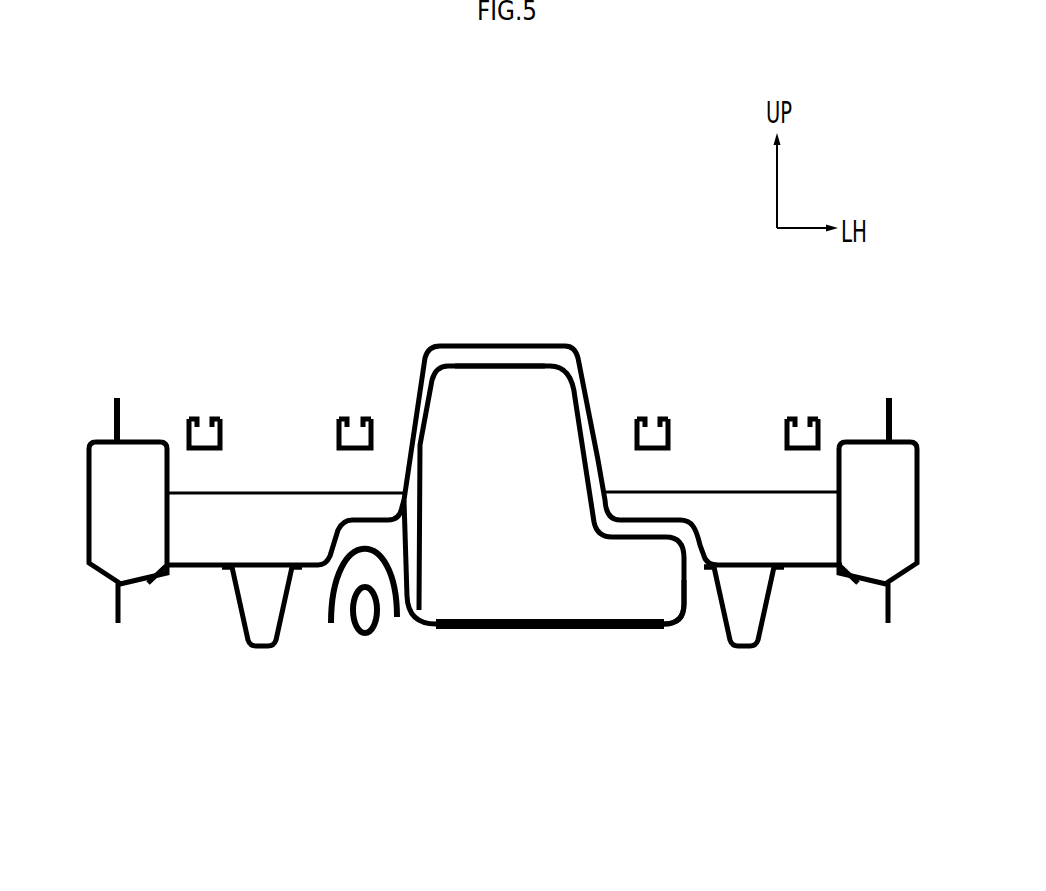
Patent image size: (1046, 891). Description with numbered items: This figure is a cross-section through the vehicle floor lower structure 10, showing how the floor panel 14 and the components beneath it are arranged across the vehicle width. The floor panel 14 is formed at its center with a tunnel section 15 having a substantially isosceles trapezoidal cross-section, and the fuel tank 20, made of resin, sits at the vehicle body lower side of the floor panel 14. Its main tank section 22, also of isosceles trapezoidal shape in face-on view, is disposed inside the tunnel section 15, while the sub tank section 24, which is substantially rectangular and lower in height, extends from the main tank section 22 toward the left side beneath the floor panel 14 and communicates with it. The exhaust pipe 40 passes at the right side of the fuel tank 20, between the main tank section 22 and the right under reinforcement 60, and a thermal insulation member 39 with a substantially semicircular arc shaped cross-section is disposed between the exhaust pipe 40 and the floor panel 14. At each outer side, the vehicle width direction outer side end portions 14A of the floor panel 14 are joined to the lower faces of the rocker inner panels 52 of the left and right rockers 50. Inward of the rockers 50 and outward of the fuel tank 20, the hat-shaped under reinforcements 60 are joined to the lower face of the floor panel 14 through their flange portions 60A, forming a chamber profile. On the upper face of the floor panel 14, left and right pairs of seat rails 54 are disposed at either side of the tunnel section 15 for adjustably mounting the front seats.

The vehicle floor lower structure 10 is at (503, 525).
The floor panel 14 is at (399, 422).
The vehicle width direction outer side end portion 14A is at (158, 587).
The tunnel section 15 is at (524, 343).
The fuel tank 20 is at (476, 642).
The main tank section 22 is at (500, 368).
The sub tank section 24 is at (610, 632).
The thermal insulation member 39 is at (326, 617).
The exhaust pipe 40 is at (365, 638).
The rocker 50 is at (100, 425).
The rocker inner panel 52 is at (135, 438).
The seat rail 54 is at (342, 417).
The under reinforcement 60 is at (259, 658).
The flange portion 60A is at (233, 578).